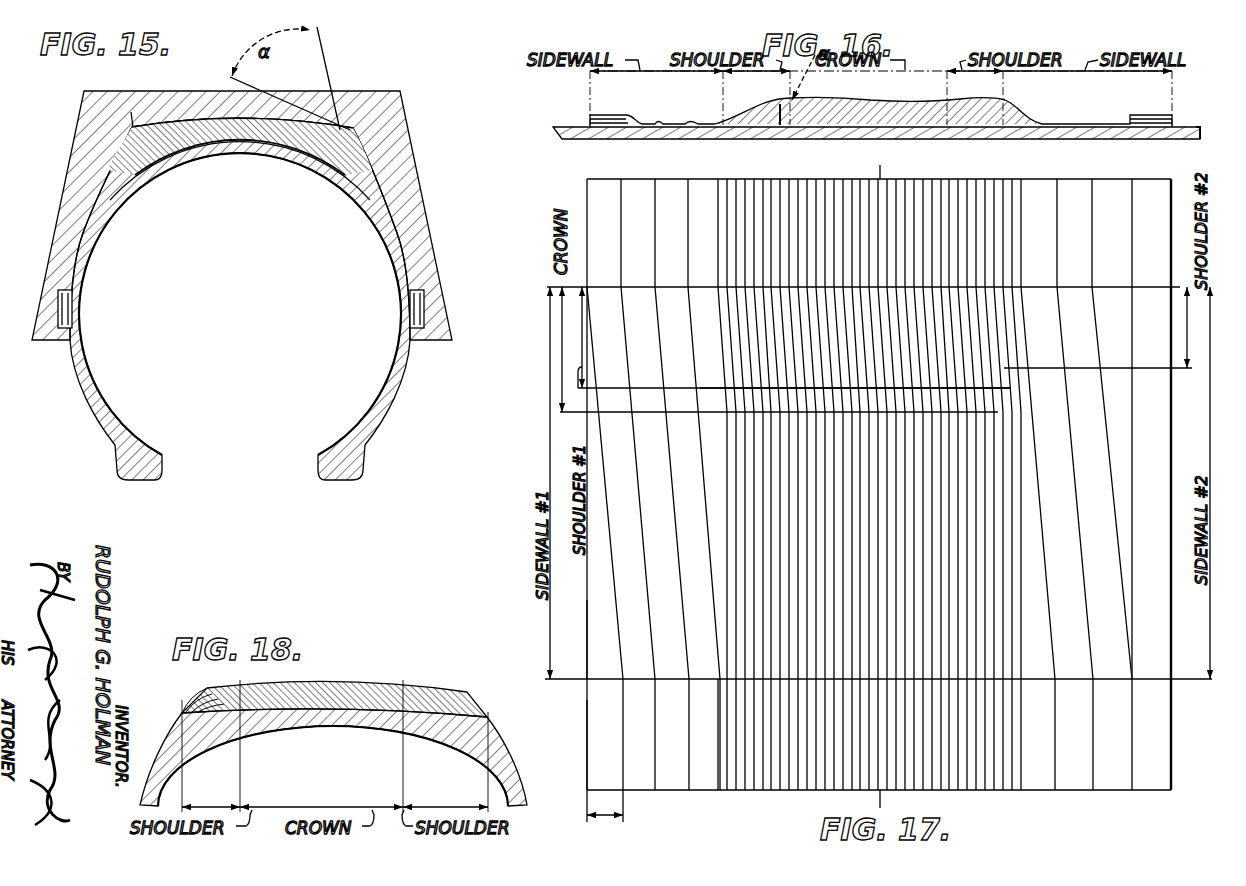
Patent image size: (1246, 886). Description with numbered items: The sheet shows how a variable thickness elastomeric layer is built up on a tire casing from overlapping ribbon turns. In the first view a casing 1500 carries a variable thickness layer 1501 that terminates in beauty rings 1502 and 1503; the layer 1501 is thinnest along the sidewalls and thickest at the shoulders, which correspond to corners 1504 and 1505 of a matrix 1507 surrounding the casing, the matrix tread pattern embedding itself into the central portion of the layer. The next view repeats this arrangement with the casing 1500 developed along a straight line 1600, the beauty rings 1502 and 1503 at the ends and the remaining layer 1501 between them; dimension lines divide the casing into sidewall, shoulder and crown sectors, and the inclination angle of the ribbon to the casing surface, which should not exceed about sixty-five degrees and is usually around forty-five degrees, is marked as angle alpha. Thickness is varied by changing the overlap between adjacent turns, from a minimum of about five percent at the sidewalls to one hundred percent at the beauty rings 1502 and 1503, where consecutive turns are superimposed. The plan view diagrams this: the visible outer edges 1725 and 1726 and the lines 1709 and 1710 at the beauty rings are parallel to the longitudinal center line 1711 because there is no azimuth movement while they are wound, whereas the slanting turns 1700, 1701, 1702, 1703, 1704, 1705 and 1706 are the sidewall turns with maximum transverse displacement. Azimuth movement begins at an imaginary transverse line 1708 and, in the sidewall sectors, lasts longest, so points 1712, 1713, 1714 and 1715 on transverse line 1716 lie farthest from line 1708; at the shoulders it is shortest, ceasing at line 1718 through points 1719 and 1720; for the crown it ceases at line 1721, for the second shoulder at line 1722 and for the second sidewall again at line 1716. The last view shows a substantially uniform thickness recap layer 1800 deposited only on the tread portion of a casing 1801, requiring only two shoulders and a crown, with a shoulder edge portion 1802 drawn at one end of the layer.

In FIG. 15, the casing 1500 is at (383, 406).
In FIG. 16, the casing 1500 is at (988, 130).
In FIG. 15, the variable thickness layer 1501 is at (192, 148).
In FIG. 16, the variable thickness layer 1501 is at (925, 112).
In FIG. 15, the beauty ring 1502 is at (66, 333).
In FIG. 16, the beauty ring 1502 is at (612, 118).
In FIG. 17, the beauty ring 1502 is at (598, 748).
In FIG. 15, the beauty ring 1503 is at (418, 333).
In FIG. 16, the beauty ring 1503 is at (1148, 115).
In FIG. 17, the beauty ring 1503 is at (1140, 718).
In FIG. 15, the corner of matrix 1504 is at (131, 112).
In FIG. 15, the corner of matrix 1505 is at (355, 128).
In FIG. 15, the matrix 1507 is at (405, 172).
In FIG. 16, the straight line 1600 is at (1216, 97).
In FIG. 17, the straight line 1600 is at (583, 179).
In FIG. 17, the slanting turn 1700 is at (637, 592).
In FIG. 17, the slanting turn 1701 is at (652, 535).
In FIG. 17, the slanting turn 1702 is at (683, 488).
In FIG. 17, the slanting turn 1703 is at (712, 458).
In FIG. 17, the slanting turn 1704 is at (1100, 200).
In FIG. 17, the slanting turn 1705 is at (1082, 236).
In FIG. 17, the slanting turn 1706 is at (1045, 262).
In FIG. 17, the imaginary transverse line 1708 is at (553, 287).
In FIG. 17, the line 1709 is at (587, 707).
In FIG. 17, the line 1710 is at (1171, 745).
In FIG. 17, the longitudinal center line 1711 is at (884, 165).
In FIG. 17, the point 1712 is at (624, 679).
In FIG. 17, the point 1713 is at (656, 679).
In FIG. 17, the point 1714 is at (684, 681).
In FIG. 17, the point 1715 is at (718, 681).
In FIG. 17, the transverse line 1716 is at (1108, 679).
In FIG. 17, the line 1718 is at (638, 388).
In FIG. 17, the point 1719 is at (725, 388).
In FIG. 17, the point 1720 is at (763, 388).
In FIG. 17, the line 1721 is at (714, 412).
In FIG. 17, the line 1722 is at (1070, 368).
In FIG. 17, the visible outer edge 1725 is at (590, 630).
In FIG. 17, the visible outer edge 1726 is at (1132, 538).
In FIG. 18, the substantially uniform thickness layer 1800 is at (430, 697).
In FIG. 18, the casing 1801 is at (472, 760).
In FIG. 18, the shoulder wedge 1802 is at (183, 712).